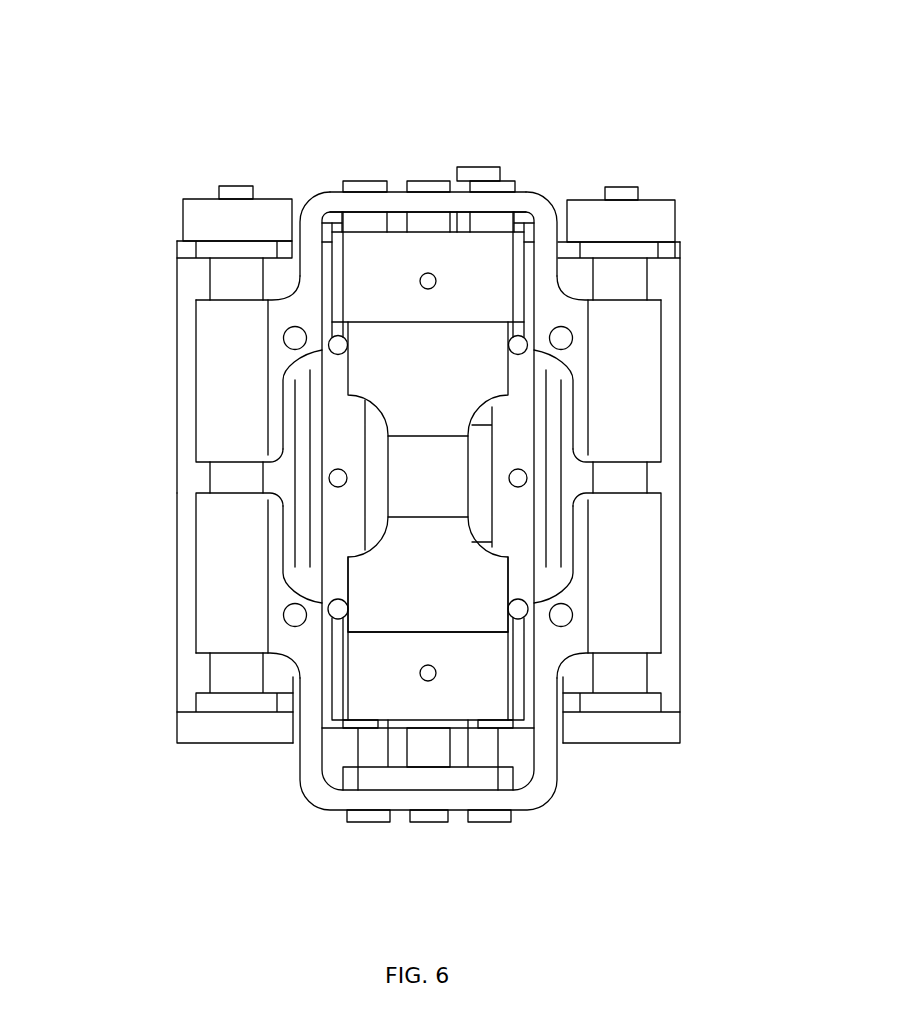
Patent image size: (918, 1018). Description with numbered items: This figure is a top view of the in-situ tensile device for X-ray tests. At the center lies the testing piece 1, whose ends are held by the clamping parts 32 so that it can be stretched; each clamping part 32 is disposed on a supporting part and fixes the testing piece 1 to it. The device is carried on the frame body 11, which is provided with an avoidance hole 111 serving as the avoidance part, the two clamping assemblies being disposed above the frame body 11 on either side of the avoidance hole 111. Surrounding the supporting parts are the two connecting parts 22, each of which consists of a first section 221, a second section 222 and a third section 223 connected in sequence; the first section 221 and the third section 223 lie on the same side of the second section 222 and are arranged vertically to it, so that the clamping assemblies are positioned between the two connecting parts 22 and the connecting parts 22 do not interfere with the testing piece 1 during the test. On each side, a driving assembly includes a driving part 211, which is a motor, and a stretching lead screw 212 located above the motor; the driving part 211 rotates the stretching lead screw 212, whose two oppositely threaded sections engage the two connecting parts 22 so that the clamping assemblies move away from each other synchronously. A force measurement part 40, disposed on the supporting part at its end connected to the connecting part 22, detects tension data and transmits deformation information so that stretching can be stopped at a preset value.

The testing piece 1 is at (445, 475).
The frame body 11 is at (523, 577).
The avoidance hole 111 is at (483, 518).
The connecting part 22 is at (302, 80).
The first section 221 is at (298, 303).
The second section 222 is at (410, 203).
The third section 223 is at (558, 247).
The driving part 211 is at (190, 565).
The stretching lead screw 212 is at (220, 478).
The clamping part 32 is at (378, 672).
The force measurement part 40 is at (430, 747).